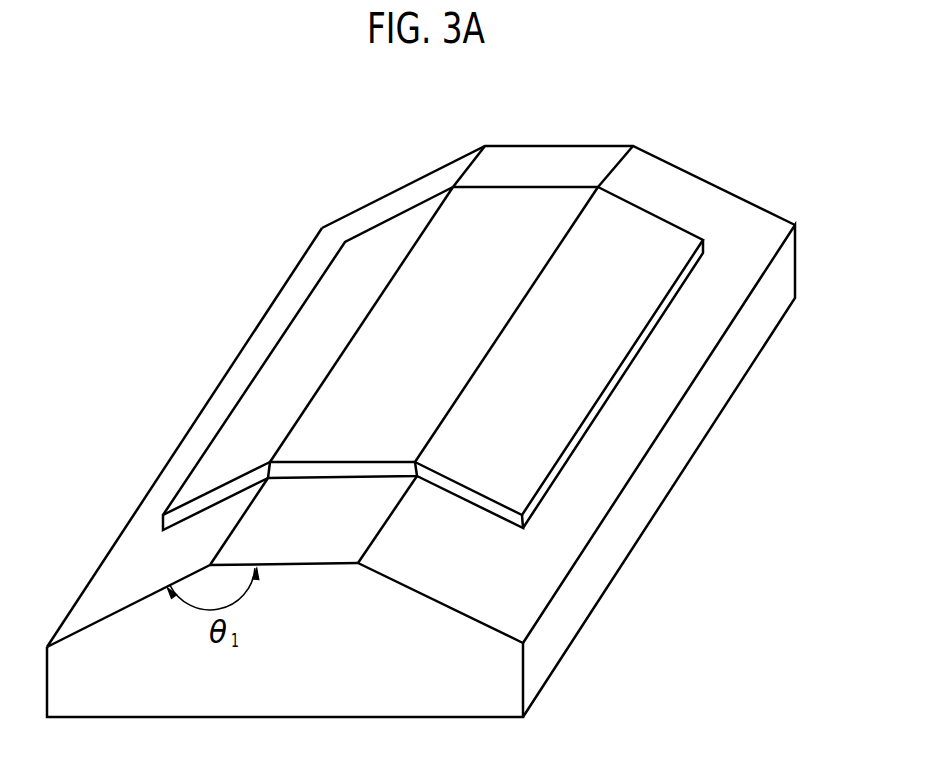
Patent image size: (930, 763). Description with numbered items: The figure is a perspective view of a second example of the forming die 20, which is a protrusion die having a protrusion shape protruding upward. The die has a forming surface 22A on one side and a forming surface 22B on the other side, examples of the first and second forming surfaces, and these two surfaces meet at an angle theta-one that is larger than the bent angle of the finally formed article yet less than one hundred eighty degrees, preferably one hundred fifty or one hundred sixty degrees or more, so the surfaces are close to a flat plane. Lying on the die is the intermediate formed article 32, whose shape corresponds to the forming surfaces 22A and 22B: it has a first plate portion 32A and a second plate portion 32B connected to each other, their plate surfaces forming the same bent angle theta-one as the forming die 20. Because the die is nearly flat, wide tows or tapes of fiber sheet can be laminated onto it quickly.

The forming die 20 is at (729, 208).
The forming surface 22A is at (572, 163).
The forming surface 22B is at (323, 247).
The intermediate formed article 32 is at (530, 200).
The first plate portion 32A is at (457, 200).
The second plate portion 32B is at (310, 313).